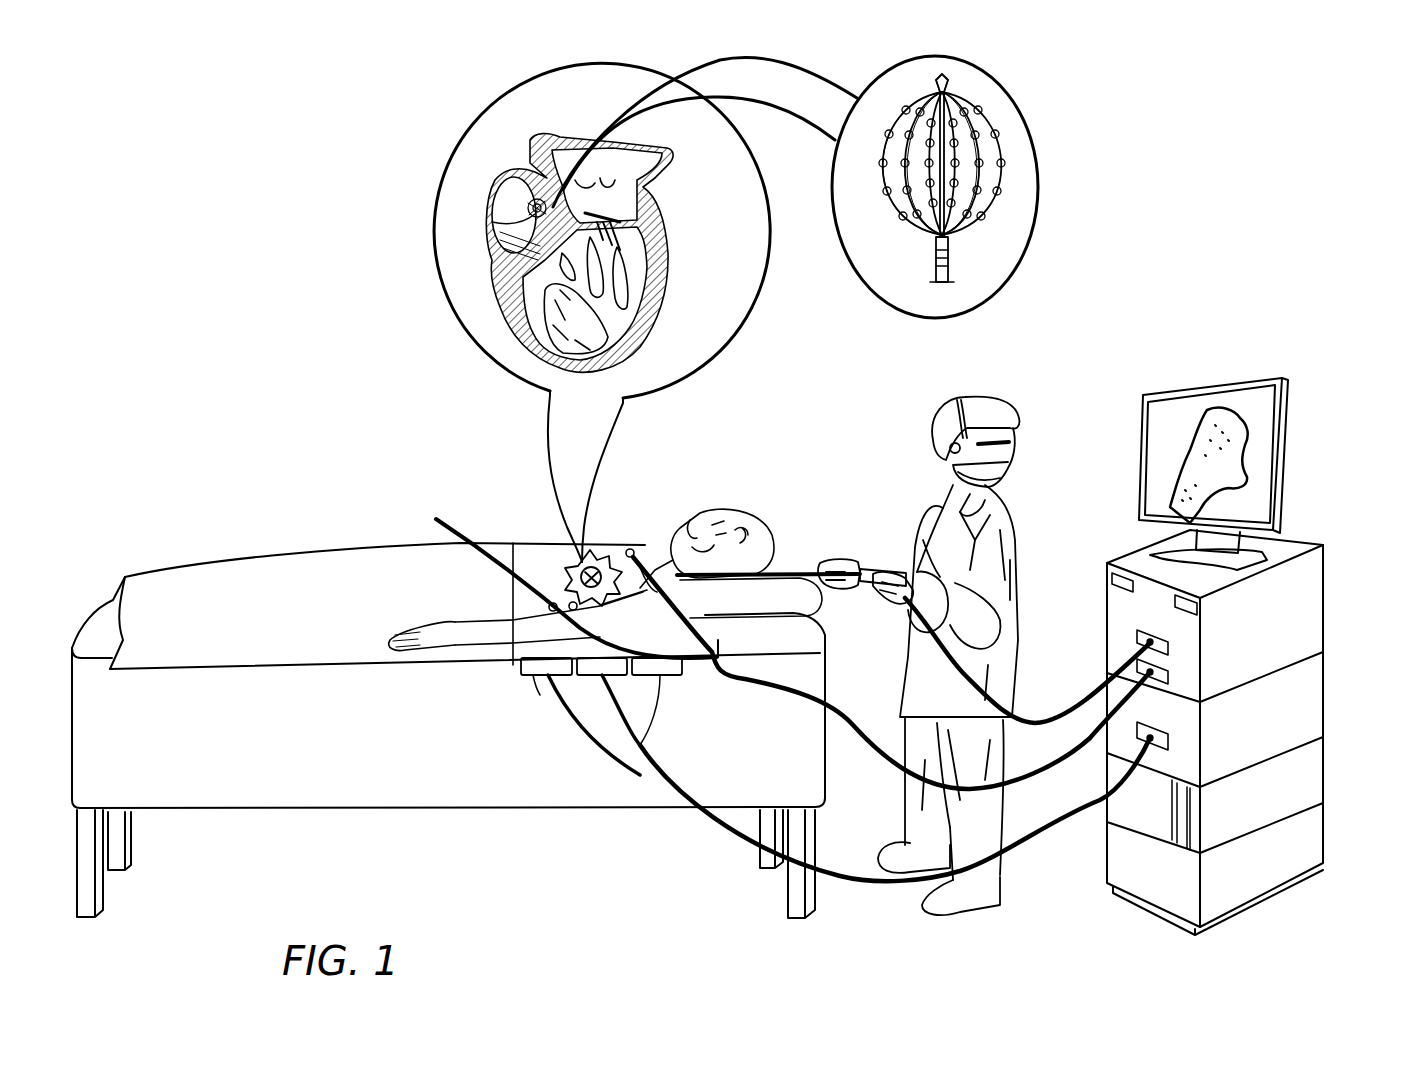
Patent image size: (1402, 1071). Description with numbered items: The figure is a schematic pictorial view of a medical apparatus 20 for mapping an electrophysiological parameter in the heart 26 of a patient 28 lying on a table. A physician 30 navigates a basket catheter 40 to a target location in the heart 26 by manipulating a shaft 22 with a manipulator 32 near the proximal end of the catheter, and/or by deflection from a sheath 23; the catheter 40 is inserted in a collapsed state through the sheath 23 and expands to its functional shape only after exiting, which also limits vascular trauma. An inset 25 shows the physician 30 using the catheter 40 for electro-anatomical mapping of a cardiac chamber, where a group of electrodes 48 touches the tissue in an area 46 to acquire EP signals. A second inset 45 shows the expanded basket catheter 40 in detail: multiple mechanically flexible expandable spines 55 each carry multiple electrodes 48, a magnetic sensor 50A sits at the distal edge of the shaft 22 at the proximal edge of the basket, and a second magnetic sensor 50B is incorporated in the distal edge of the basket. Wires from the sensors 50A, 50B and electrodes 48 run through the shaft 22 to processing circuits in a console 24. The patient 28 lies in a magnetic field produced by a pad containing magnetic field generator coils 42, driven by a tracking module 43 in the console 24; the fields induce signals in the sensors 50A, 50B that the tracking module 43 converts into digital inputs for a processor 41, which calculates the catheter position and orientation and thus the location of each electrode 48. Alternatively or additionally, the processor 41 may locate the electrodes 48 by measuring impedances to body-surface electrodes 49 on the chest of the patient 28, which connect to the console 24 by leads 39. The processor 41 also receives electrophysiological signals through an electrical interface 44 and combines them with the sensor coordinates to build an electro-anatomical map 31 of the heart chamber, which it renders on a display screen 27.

The medical apparatus 20 is at (1160, 234).
The shaft 22 is at (492, 212).
The sheath 23 is at (605, 557).
The console 24 is at (1355, 387).
The inset 25 is at (478, 226).
The heart 26 is at (668, 262).
The display screen 27 is at (1288, 412).
The patient 28 is at (752, 512).
The physician 30 is at (1003, 396).
The electro-anatomical map 31 is at (1222, 400).
The manipulator 32 is at (880, 570).
The leads 39 is at (865, 745).
The basket catheter 40 is at (970, 148).
The processor 41 is at (1325, 770).
The magnetic field generator coils 42 is at (535, 695).
The tracking module 43 is at (1325, 690).
The electrical interface 44 is at (1105, 610).
The inset 45 is at (1035, 242).
The area 46 is at (545, 205).
The electrodes 48 is at (983, 197).
The body-surface electrodes 49 is at (510, 568).
The magnetic sensor 50A is at (949, 262).
The second magnetic sensor 50B is at (950, 90).
The expandable spines 55 is at (890, 190).